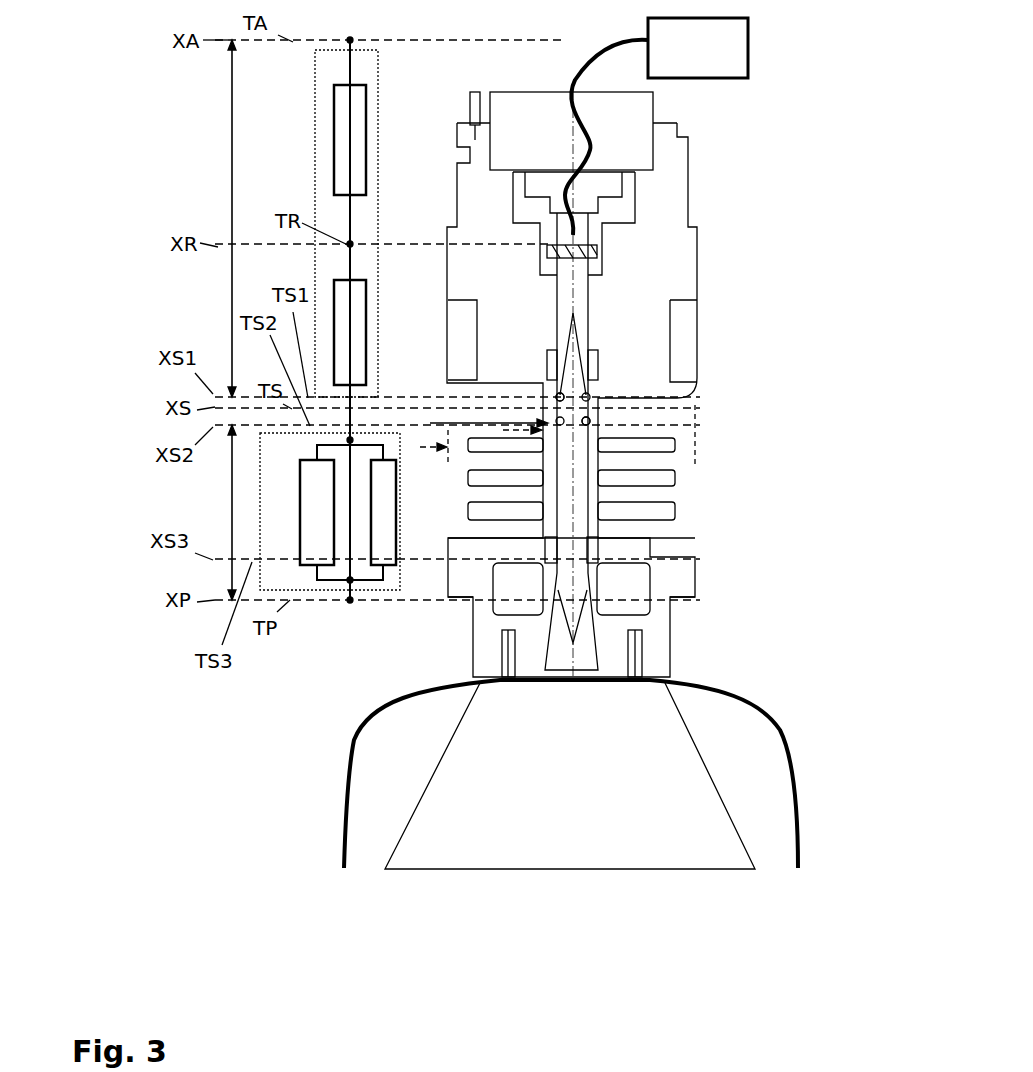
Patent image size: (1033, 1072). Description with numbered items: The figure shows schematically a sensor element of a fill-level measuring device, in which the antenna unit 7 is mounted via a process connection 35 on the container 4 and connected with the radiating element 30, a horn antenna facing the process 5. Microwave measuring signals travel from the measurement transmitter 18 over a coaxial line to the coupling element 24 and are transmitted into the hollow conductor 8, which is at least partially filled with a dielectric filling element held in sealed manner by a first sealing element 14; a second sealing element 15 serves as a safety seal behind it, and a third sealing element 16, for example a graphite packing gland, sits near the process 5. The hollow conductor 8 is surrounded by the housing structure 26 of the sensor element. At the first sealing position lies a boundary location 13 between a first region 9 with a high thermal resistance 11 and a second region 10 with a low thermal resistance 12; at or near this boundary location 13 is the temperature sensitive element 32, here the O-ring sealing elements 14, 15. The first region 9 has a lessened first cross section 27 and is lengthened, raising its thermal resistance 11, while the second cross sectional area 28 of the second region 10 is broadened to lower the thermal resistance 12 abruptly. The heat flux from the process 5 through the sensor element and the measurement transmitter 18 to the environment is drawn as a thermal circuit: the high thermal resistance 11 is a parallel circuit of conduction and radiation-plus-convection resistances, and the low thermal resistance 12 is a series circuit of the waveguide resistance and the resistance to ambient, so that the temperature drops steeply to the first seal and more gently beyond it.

The container 4 is at (357, 735).
The process 5 is at (388, 758).
The antenna unit 7 is at (735, 110).
The hollow conductor 8 is at (585, 298).
The first region 9 is at (231, 494).
The second region 10 is at (233, 165).
The high thermal resistance 11 is at (294, 581).
The low thermal resistance 12 is at (346, 78).
The boundary location 13 is at (472, 424).
The first sealing element 14 is at (556, 420).
The second sealing element 15 is at (556, 396).
The third sealing element 16 is at (546, 556).
The measurement transmitter 18 is at (735, 61).
The coupling element 24 is at (580, 252).
The housing 26 is at (722, 277).
The first cross section 27 is at (603, 430).
The second cross sectional area 28 is at (697, 448).
The radiating element 30 is at (460, 733).
The temperature sensitive element 32 is at (556, 396).
The process connection 35 is at (705, 556).